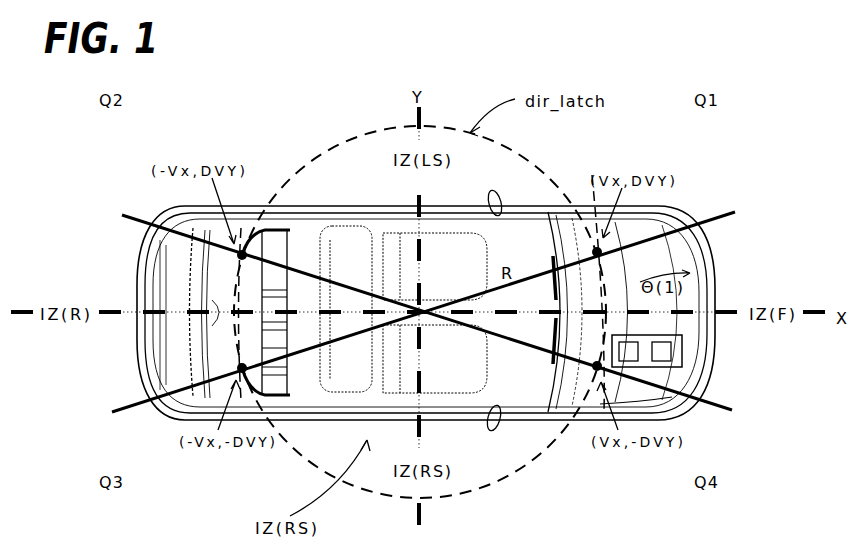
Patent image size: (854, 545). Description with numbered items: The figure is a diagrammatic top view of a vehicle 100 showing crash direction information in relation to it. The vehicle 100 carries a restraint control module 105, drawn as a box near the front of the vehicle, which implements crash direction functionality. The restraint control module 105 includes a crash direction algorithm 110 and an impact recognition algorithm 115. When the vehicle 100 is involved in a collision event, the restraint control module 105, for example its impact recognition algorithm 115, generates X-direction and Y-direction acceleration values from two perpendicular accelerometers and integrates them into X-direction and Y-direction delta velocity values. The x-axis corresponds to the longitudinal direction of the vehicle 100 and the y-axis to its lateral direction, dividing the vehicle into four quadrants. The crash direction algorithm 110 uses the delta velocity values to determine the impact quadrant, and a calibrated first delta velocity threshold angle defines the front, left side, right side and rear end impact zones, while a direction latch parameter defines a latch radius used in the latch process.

The vehicle 100 is at (307, 125).
The restraint control module 105 is at (657, 336).
The crash direction algorithm 110 is at (677, 400).
The impact recognition algorithm 115 is at (620, 352).